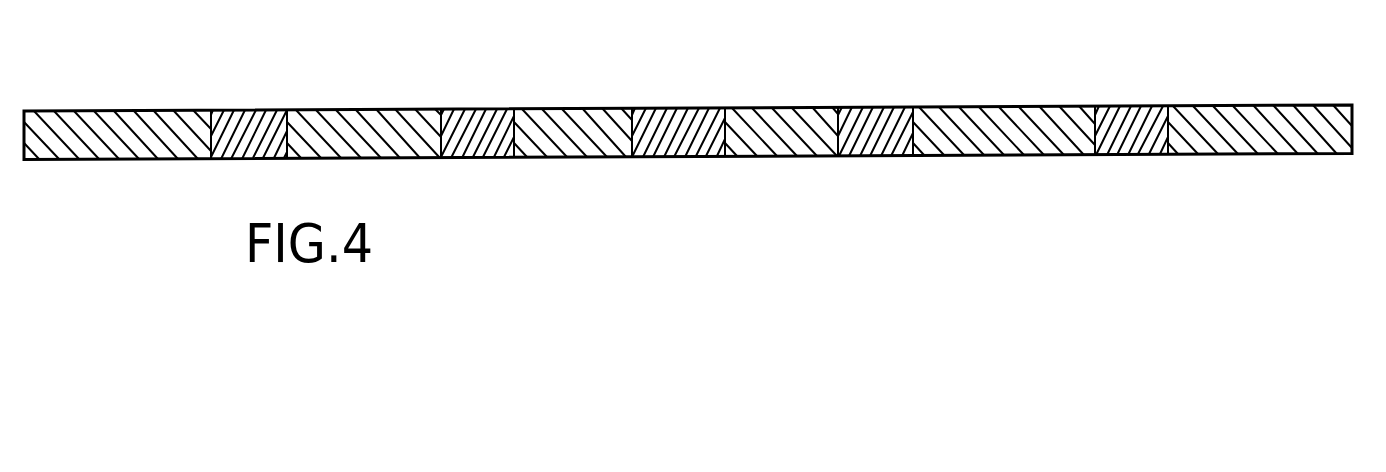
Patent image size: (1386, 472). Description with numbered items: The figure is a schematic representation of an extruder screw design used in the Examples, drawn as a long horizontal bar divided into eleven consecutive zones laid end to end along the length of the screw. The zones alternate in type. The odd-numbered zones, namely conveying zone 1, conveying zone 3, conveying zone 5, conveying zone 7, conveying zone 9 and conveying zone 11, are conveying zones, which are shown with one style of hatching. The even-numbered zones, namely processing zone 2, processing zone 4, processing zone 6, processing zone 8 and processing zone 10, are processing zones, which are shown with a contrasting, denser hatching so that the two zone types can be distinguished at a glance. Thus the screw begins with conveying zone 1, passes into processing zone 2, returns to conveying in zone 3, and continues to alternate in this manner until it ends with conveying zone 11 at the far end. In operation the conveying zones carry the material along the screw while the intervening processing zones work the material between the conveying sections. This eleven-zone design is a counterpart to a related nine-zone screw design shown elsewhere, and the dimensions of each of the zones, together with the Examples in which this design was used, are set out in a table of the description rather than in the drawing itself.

The conveying zone 1 is at (135, 110).
The processing zone 2 is at (237, 110).
The conveying zone 3 is at (358, 110).
The processing zone 4 is at (469, 108).
The conveying zone 5 is at (582, 108).
The processing zone 6 is at (657, 108).
The conveying zone 7 is at (745, 106).
The processing zone 8 is at (863, 106).
The conveying zone 9 is at (963, 106).
The processing zone 10 is at (1136, 105).
The conveying zone 11 is at (1245, 105).